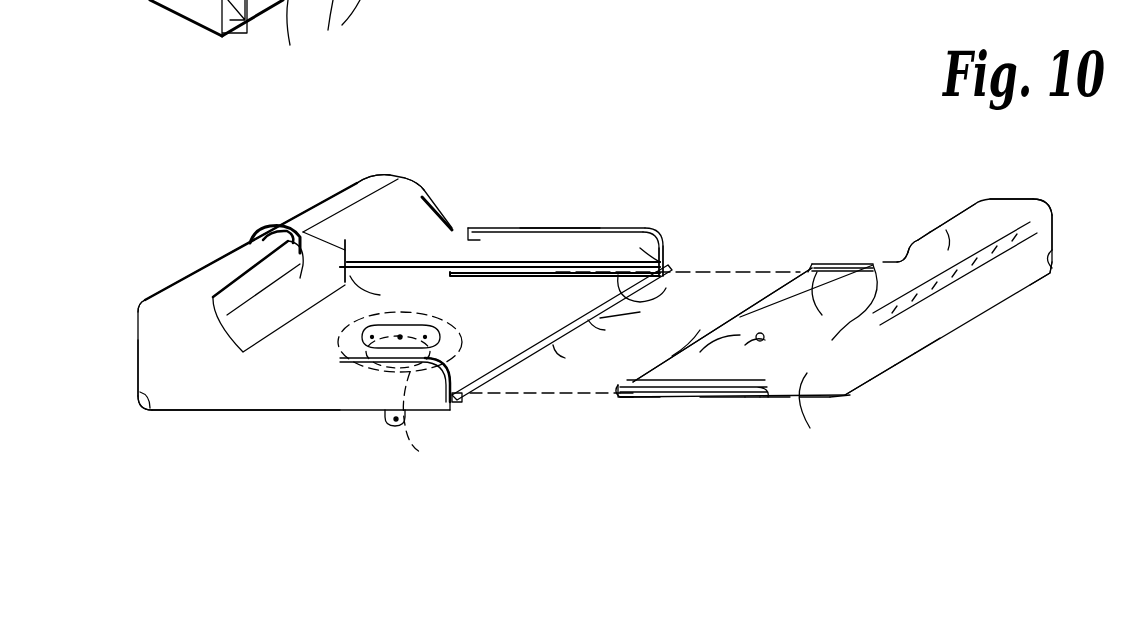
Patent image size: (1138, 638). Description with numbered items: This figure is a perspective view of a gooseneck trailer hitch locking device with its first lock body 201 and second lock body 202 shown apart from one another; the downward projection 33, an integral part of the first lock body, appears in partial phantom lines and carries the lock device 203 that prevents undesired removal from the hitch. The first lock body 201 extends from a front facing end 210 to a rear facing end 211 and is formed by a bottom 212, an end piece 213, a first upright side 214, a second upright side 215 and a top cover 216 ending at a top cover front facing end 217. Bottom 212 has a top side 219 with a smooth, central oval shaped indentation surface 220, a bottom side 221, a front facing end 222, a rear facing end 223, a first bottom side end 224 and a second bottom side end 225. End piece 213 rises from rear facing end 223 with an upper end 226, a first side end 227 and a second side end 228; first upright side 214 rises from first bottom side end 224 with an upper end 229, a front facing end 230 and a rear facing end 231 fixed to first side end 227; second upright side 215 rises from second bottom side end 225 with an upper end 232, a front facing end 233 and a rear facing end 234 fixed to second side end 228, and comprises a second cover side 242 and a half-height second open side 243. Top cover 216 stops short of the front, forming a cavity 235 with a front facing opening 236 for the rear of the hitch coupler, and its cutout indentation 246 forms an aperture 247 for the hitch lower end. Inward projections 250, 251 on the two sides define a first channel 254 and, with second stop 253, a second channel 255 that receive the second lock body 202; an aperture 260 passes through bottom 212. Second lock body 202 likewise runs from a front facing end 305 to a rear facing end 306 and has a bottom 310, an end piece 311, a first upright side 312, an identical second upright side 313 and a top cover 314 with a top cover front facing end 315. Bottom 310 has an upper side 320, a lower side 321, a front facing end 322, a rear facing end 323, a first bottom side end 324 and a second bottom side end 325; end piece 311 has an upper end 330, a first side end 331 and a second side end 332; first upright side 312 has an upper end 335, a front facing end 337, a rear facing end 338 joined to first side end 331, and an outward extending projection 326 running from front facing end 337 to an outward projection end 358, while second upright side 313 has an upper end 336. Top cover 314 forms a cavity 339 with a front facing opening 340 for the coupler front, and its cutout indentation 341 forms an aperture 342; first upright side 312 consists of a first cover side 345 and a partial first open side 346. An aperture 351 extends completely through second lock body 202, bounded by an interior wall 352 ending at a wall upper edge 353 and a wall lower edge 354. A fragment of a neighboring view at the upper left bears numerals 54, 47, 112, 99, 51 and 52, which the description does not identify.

The first lock body 201 is at (540, 148).
The second lock body 202 is at (850, 145).
The frame member 54 is at (220, 38).
The bracket 47 is at (240, 22).
The latch 112 is at (258, 25).
The spring 99 is at (290, 45).
The arm 51 is at (328, 30).
The pin 52 is at (357, 22).
The downward projection 33 is at (385, 414).
The lock device 203 is at (418, 452).
The front facing end 210 is at (595, 322).
The rear facing end 211 is at (222, 262).
The bottom 212 is at (592, 288).
The end piece 213 is at (290, 290).
The first upright side 214 is at (210, 380).
The second upright side 215 is at (640, 250).
The top cover 216 is at (360, 190).
The top cover front facing end 217 is at (420, 185).
The top side 219 is at (440, 268).
The oval shaped indentation surface 220 is at (330, 365).
The bottom side 221 is at (560, 350).
The front facing end 222 is at (620, 318).
The rear facing end 223 is at (230, 290).
The first bottom side end 224 is at (460, 412).
The second bottom side end 225 is at (700, 268).
The upper end 226 is at (146, 310).
The first side end 227 is at (150, 410).
The second side end 228 is at (350, 250).
The upper end 229 is at (282, 360).
The front facing end 230 is at (458, 365).
The rear facing end 231 is at (137, 373).
The upper end 232 is at (470, 226).
The front facing end 233 is at (663, 253).
The rear facing end 234 is at (311, 206).
The cavity 235 is at (350, 276).
The front facing opening 236 is at (418, 188).
The second cover side 242 is at (480, 207).
The second open side 243 is at (553, 228).
The cutout indentation 246 is at (317, 255).
The aperture 247 is at (275, 228).
The inward projection 250 is at (480, 396).
The inward projection 251 is at (645, 298).
The second stop 253 is at (457, 278).
The first channel 254 is at (465, 402).
The second channel 255 is at (563, 280).
The aperture 260 is at (445, 330).
The front facing end 305 is at (918, 340).
The rear facing end 306 is at (722, 325).
The bottom 310 is at (667, 347).
The end piece 311 is at (1033, 238).
The first upright side 312 is at (752, 397).
The second upright side 313 is at (1003, 197).
The top cover 314 is at (950, 232).
The top cover front facing end 315 is at (973, 197).
The upper side 320 is at (727, 397).
The lower side 321 is at (737, 398).
The front facing end 322 is at (812, 270).
The rear facing end 323 is at (877, 380).
The first bottom side end 324 is at (847, 395).
The second bottom side end 325 is at (1053, 274).
The outward extending projection 326 is at (637, 397).
The upper end 330 is at (982, 303).
The first side end 331 is at (853, 390).
The second side end 332 is at (1048, 258).
The upper end 335 is at (870, 264).
The upper end 336 is at (1000, 207).
The front facing end 337 is at (617, 397).
The rear facing end 338 is at (860, 380).
The cavity 339 is at (952, 228).
The front facing opening 340 is at (778, 320).
The cutout indentation 341 is at (883, 262).
The aperture 342 is at (882, 205).
The first cover side 345 is at (823, 409).
The first open side 346 is at (667, 397).
The aperture 351 is at (806, 291).
The interior wall 352 is at (775, 350).
The wall upper edge 353 is at (757, 344).
The wall lower edge 354 is at (740, 345).
The outward projection end 358 is at (770, 397).